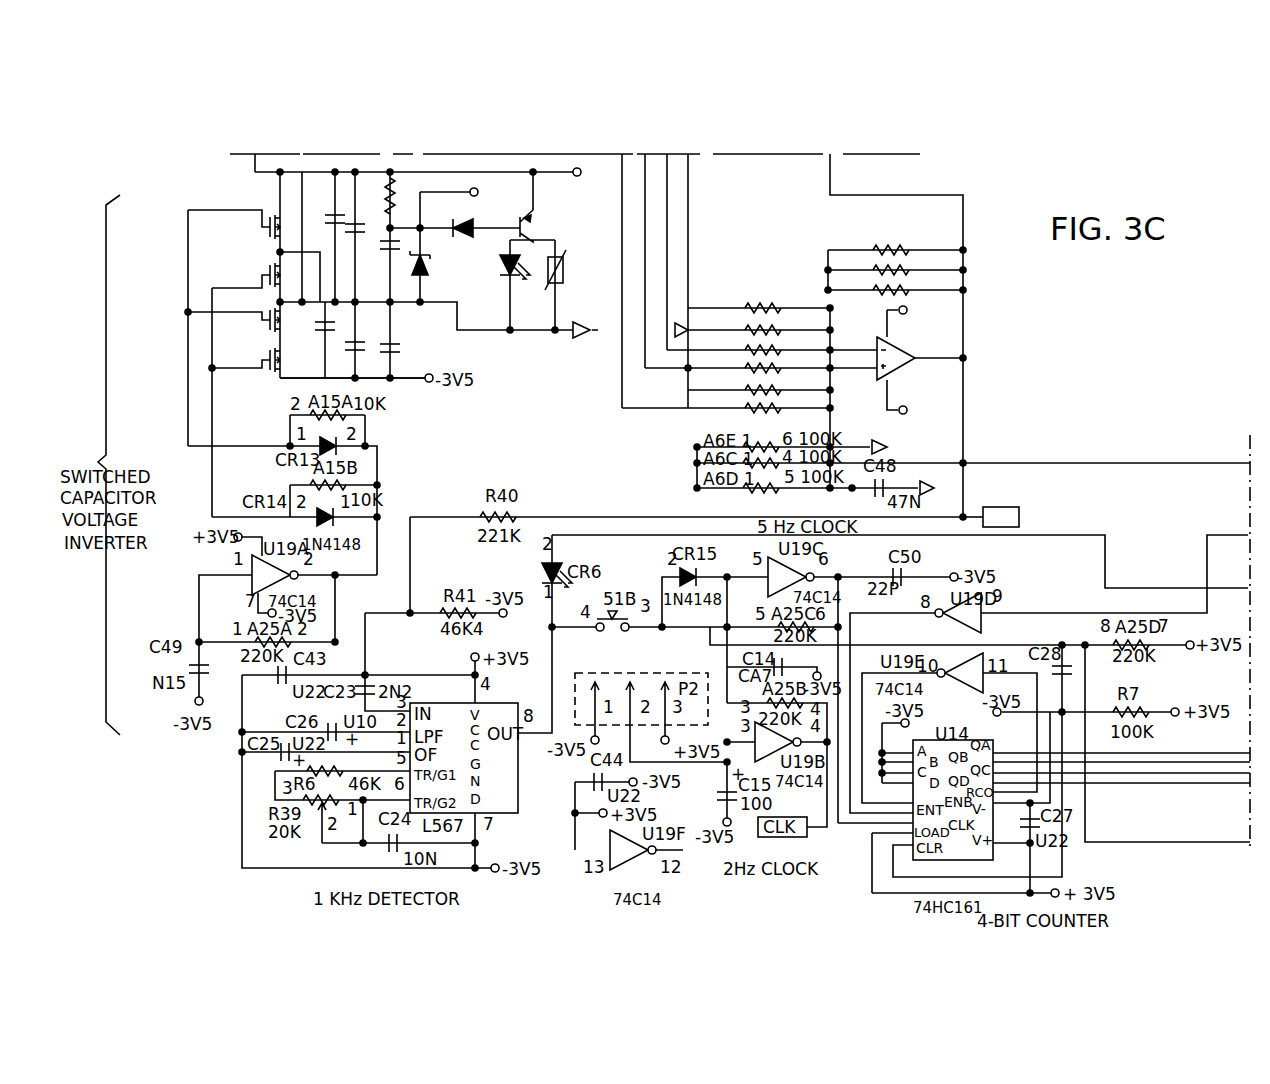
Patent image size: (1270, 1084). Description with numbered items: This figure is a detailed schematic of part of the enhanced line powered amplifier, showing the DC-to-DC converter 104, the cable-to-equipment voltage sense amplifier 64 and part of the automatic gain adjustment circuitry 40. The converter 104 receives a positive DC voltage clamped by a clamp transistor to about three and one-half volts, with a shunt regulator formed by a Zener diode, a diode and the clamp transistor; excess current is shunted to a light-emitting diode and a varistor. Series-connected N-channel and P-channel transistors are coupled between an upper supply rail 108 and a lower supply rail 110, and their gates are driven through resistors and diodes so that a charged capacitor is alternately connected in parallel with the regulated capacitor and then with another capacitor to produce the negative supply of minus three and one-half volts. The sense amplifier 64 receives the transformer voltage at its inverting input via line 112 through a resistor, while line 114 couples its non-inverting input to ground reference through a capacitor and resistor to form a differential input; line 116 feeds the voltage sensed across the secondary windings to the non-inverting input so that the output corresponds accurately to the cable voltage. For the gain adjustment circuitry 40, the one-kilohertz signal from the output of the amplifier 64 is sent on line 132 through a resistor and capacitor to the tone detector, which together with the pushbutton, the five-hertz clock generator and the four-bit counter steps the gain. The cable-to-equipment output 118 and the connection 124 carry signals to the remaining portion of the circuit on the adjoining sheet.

The DC-to-DC converter 104 is at (232, 193).
The upper supply rail 108 is at (471, 177).
The lower supply rail 110 is at (396, 381).
The line 112 is at (666, 274).
The line 114 is at (620, 313).
The line 116 is at (670, 372).
The VCE output 118 is at (977, 514).
The output line 124 is at (1040, 463).
The line 132 is at (622, 516).
The automatic gain adjustment circuitry 40 is at (495, 580).
The cable-to-equipment voltage sense amplifier 64 is at (1010, 362).